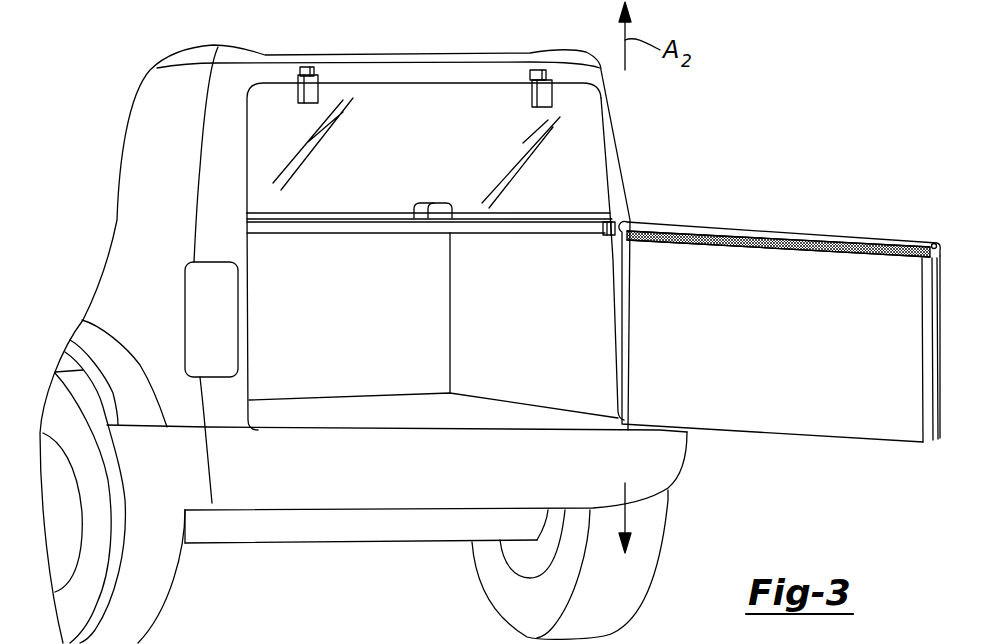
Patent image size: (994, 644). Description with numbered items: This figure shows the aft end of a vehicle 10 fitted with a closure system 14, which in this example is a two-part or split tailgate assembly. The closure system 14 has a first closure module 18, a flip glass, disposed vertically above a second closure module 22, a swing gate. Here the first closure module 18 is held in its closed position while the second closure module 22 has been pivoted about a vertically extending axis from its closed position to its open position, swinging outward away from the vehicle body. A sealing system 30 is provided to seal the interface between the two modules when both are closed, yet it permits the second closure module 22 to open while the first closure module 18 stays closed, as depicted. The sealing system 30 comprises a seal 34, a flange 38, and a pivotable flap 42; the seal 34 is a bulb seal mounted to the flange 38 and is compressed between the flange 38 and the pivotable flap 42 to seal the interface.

The vehicle 10 is at (360, 53).
The closure system 14 is at (718, 185).
The first closure module 18 is at (570, 162).
The second closure module 22 is at (833, 393).
The sealing system 30 is at (483, 227).
The seal 34 is at (797, 237).
The flange 38 is at (868, 233).
The pivotable flap 42 is at (285, 227).